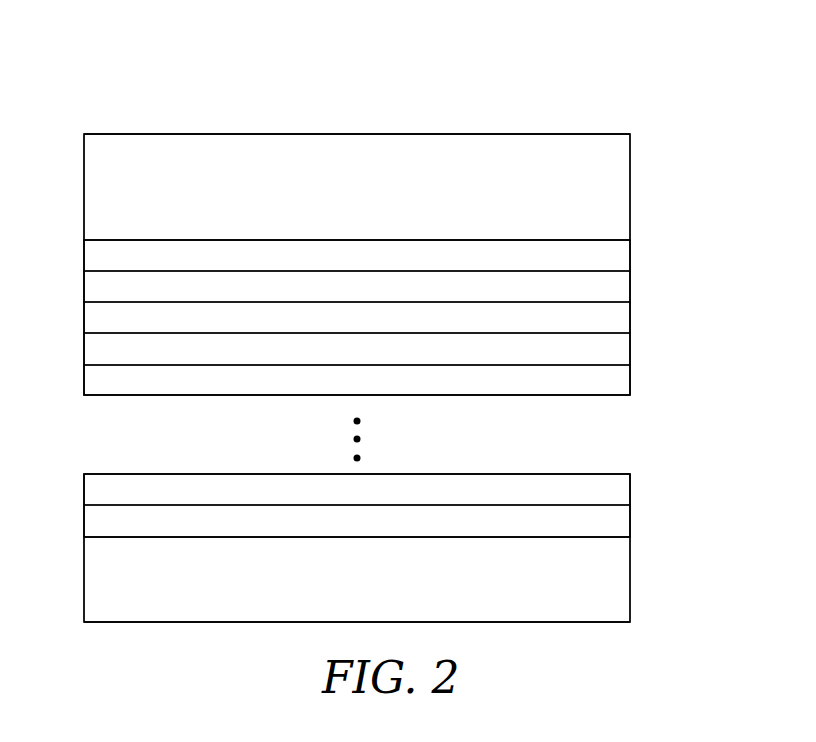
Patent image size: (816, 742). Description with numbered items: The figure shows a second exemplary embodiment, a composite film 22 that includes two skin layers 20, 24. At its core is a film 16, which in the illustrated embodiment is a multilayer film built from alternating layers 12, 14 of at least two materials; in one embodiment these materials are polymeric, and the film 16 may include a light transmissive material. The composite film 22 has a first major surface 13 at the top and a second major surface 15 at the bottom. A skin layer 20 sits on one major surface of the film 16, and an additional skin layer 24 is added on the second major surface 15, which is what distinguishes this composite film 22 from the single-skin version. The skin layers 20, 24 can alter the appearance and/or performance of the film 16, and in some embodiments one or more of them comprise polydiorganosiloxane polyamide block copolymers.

The composite film 22 is at (598, 67).
The skin layer 20 is at (613, 182).
The layer 12 is at (613, 252).
The layer 14 is at (613, 283).
The film 16 is at (68, 236).
The skin layer 24 is at (613, 573).
The first major surface 13 is at (152, 133).
The second major surface 15 is at (148, 621).